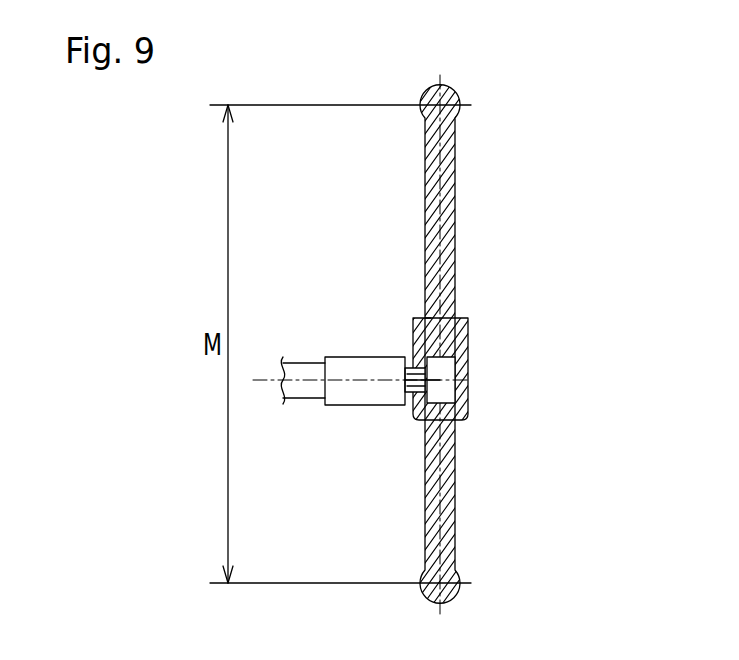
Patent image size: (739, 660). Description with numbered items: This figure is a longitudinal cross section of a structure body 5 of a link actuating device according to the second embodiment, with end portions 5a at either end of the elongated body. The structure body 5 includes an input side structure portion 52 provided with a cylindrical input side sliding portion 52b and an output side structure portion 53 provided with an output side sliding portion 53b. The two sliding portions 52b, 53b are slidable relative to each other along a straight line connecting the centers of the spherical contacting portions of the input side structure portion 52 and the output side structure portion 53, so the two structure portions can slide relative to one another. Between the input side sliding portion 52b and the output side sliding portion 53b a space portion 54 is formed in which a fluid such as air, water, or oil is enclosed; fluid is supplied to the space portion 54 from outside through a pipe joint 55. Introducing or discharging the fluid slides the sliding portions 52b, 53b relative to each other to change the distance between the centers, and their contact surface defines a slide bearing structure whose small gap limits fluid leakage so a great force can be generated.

The structure body 5 is at (496, 333).
The end portion 5a is at (457, 92).
The input side structure portion 52 is at (520, 386).
The input side sliding portion 52b is at (468, 346).
The output side structure portion 53 is at (457, 235).
The output side sliding portion 53b is at (425, 320).
The space portion 54 is at (445, 397).
The pipe joint 55 is at (365, 405).